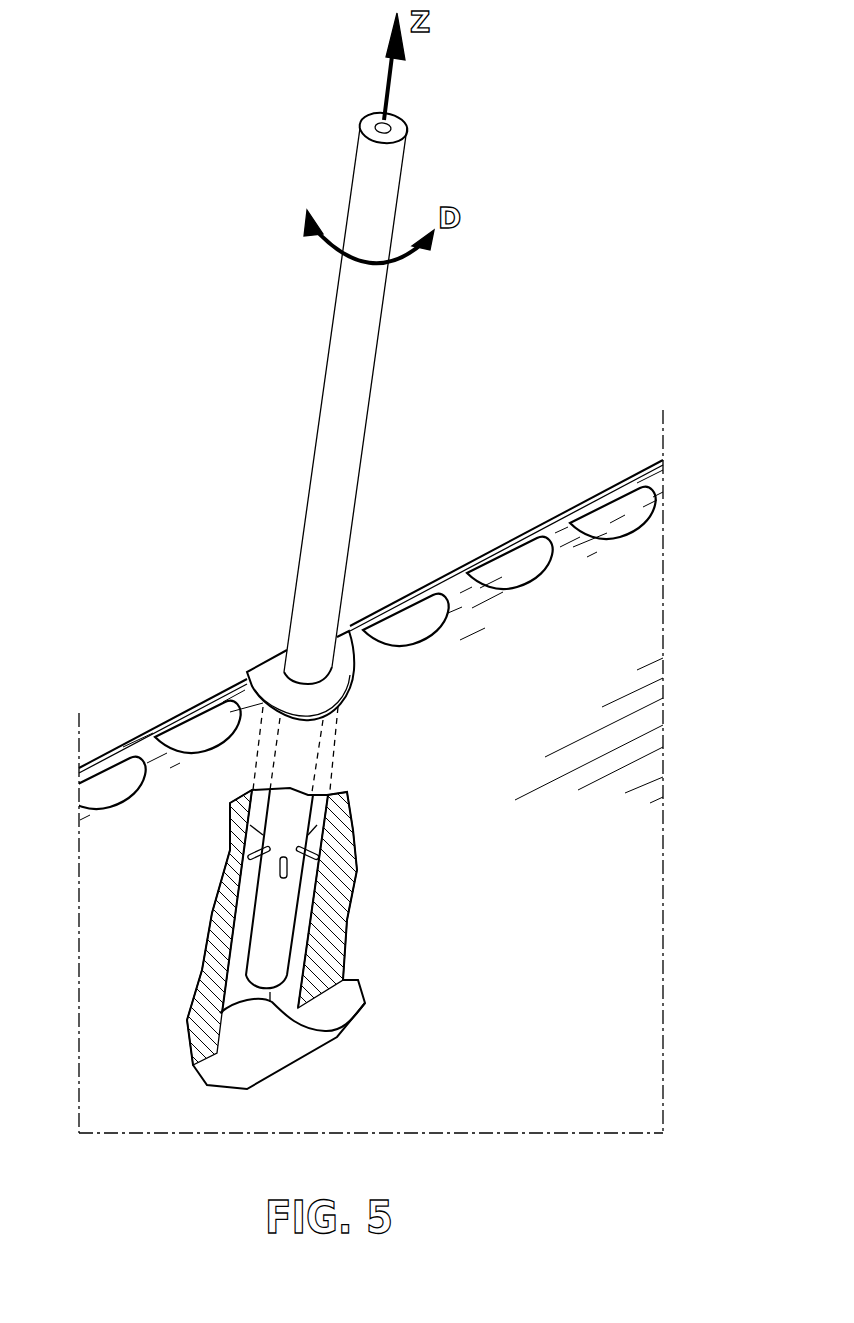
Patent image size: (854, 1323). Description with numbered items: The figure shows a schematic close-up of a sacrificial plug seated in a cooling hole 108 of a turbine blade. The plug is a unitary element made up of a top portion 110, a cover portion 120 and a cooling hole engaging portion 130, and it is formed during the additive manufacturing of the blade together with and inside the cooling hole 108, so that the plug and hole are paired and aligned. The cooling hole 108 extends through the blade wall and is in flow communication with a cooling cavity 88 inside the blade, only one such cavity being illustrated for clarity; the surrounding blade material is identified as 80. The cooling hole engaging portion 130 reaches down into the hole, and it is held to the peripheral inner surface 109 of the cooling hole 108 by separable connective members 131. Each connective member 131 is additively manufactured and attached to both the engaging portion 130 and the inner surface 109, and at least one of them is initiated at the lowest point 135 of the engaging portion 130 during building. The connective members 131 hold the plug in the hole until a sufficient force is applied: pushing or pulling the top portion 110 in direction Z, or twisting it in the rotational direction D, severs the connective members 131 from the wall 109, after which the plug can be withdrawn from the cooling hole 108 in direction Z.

The top portion 110 is at (355, 347).
The cover portion 120 is at (345, 655).
The cooling hole 108 is at (617, 540).
The peripheral inner surface 109 is at (235, 803).
The cooling hole engaging portion 130 is at (292, 803).
The separable connective member 131 is at (290, 872).
The lowest point 135 is at (313, 1030).
The cooling cavity 88 is at (248, 1048).
The panel 80 is at (465, 1061).